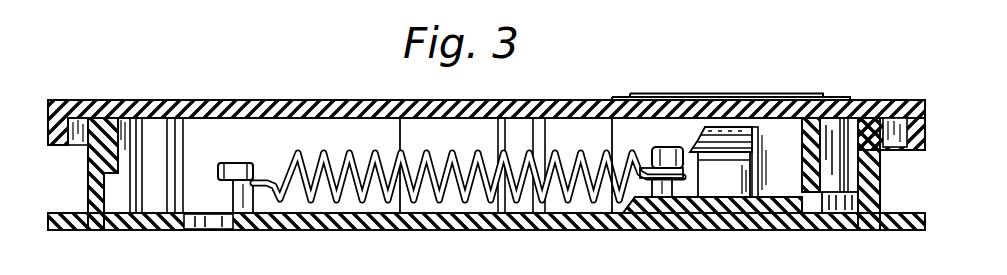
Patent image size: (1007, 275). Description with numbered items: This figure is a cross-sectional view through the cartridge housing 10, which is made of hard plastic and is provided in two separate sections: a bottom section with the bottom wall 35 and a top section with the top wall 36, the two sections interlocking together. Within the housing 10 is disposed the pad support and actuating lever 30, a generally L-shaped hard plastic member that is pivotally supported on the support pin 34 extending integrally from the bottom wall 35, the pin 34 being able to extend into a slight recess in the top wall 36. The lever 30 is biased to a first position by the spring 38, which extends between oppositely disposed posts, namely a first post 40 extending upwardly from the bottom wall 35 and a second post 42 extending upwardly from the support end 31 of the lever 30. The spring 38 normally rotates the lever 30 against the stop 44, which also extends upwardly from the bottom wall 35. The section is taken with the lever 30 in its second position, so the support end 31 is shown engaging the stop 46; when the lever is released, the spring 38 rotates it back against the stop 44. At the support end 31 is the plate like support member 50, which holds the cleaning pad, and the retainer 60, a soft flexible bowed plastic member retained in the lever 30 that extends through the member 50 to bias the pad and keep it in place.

The housing 10 is at (486, 155).
The pad support and actuating lever 30 is at (695, 234).
The support end 31 is at (787, 204).
The support pin 34 is at (250, 244).
The bottom wall 35 is at (471, 231).
The top wall 36 is at (470, 100).
The spring 38 is at (446, 154).
The first post 40 is at (250, 171).
The second post 42 is at (665, 147).
The stop 44 is at (547, 133).
The stop 46 is at (832, 232).
The plate like support member 50 is at (642, 128).
The retainer 60 is at (736, 127).